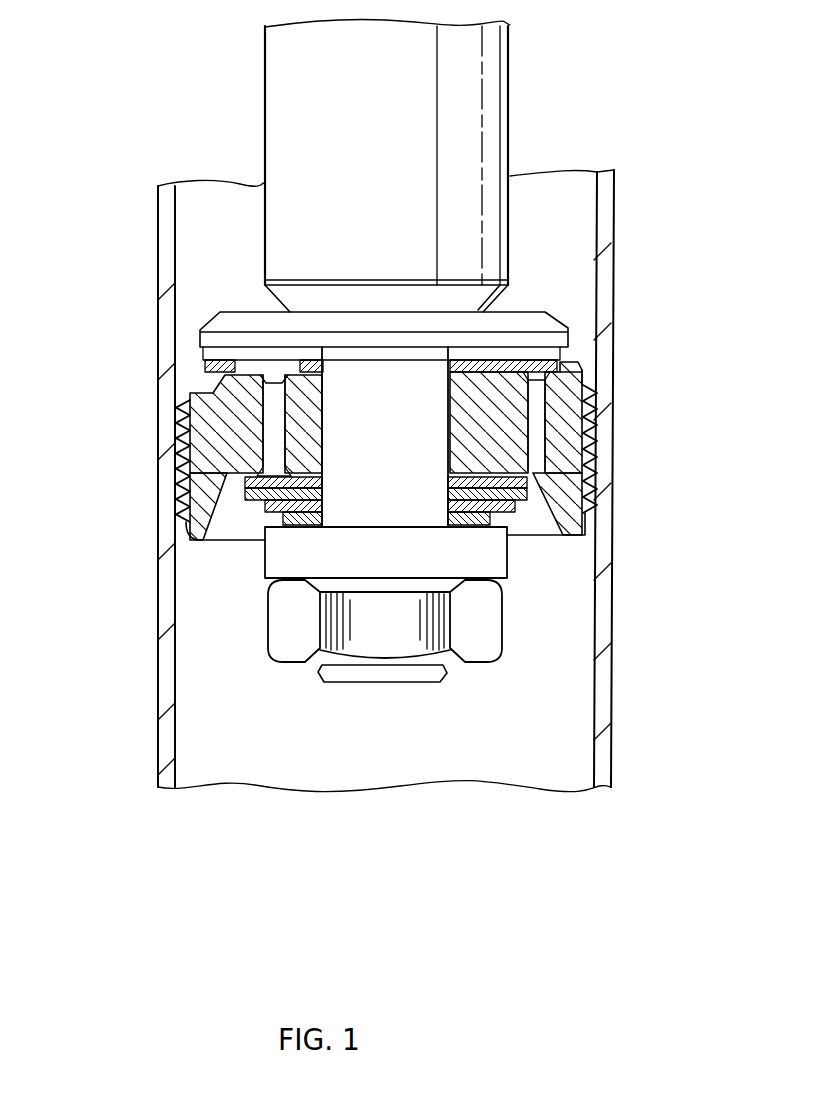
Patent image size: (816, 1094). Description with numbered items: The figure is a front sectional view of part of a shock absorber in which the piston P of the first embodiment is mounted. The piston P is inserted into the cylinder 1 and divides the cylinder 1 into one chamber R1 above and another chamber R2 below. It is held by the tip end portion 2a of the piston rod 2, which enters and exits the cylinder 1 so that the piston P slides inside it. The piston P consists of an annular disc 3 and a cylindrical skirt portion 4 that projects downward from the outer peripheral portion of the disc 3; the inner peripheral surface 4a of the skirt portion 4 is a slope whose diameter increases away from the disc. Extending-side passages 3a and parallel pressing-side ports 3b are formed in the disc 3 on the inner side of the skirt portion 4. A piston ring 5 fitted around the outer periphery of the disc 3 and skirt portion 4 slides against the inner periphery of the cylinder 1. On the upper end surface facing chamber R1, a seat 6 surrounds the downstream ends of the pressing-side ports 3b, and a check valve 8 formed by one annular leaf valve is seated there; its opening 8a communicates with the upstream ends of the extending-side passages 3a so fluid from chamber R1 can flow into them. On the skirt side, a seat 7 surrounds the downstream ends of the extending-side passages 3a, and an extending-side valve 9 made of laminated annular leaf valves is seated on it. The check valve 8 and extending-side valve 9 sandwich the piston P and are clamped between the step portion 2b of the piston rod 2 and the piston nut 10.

The cylinder 1 is at (612, 213).
The piston rod 2 is at (508, 88).
The tip end portion 2a is at (390, 456).
The step portion 2b is at (272, 306).
The annular disc 3 is at (188, 379).
The extending-side passages 3a is at (262, 424).
The pressing-side ports 3b is at (546, 444).
The cylindrical skirt portion 4 is at (178, 546).
The inner peripheral surface 4a is at (585, 540).
The piston ring 5 is at (178, 470).
The seat 6 is at (565, 370).
The seat 7 is at (516, 480).
The check valve 8 is at (558, 333).
The opening 8a is at (205, 353).
The extending-side valve 9 is at (513, 530).
The piston nut 10 is at (488, 665).
The piston P is at (598, 381).
The one chamber R1 is at (228, 183).
The another chamber R2 is at (288, 741).